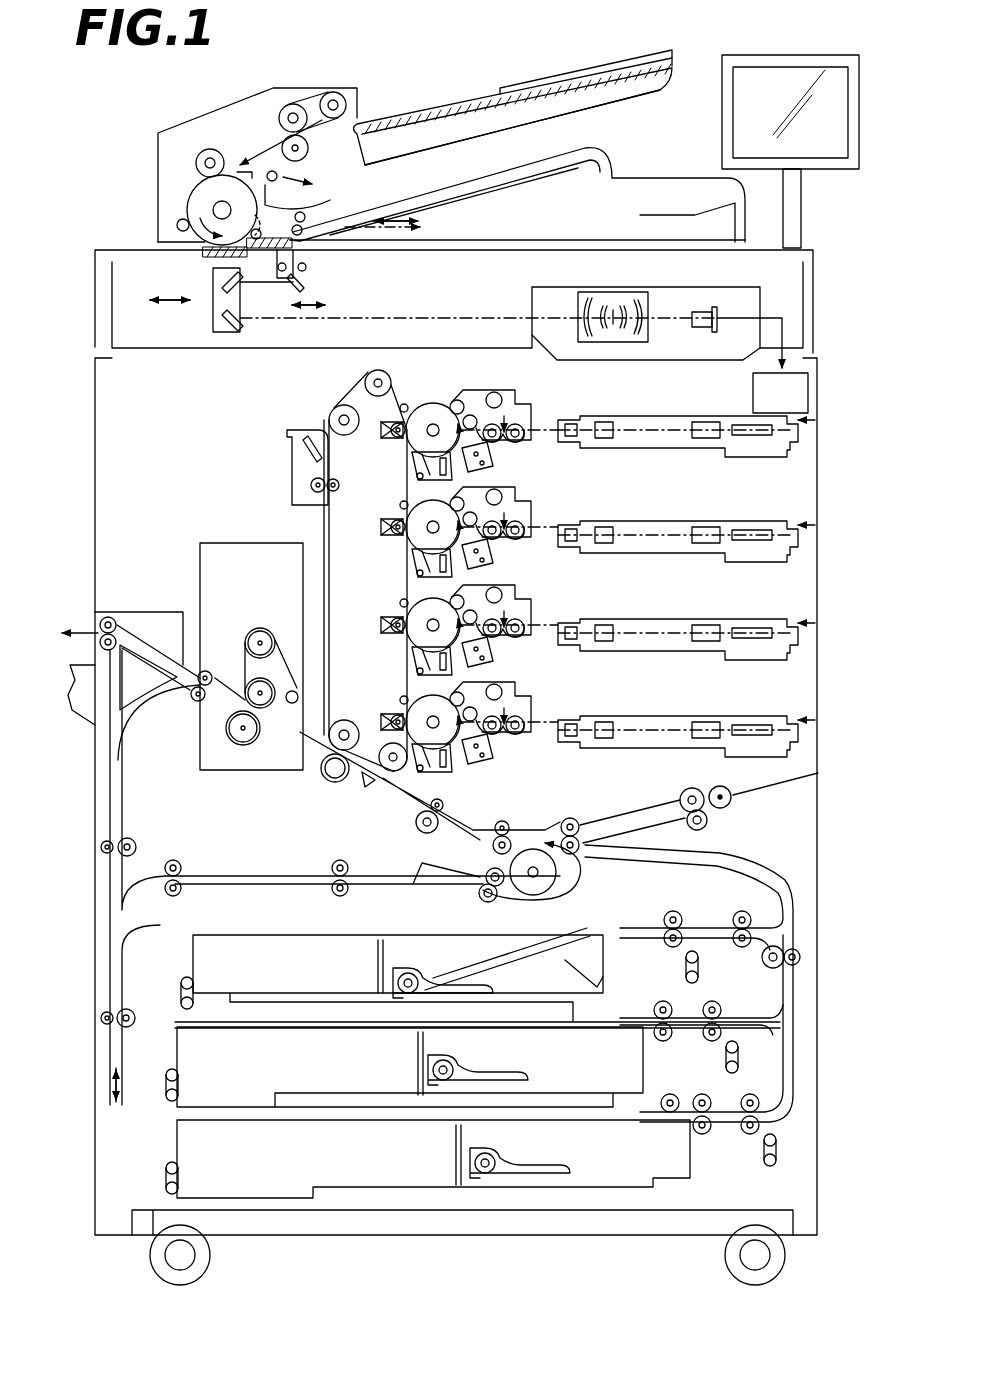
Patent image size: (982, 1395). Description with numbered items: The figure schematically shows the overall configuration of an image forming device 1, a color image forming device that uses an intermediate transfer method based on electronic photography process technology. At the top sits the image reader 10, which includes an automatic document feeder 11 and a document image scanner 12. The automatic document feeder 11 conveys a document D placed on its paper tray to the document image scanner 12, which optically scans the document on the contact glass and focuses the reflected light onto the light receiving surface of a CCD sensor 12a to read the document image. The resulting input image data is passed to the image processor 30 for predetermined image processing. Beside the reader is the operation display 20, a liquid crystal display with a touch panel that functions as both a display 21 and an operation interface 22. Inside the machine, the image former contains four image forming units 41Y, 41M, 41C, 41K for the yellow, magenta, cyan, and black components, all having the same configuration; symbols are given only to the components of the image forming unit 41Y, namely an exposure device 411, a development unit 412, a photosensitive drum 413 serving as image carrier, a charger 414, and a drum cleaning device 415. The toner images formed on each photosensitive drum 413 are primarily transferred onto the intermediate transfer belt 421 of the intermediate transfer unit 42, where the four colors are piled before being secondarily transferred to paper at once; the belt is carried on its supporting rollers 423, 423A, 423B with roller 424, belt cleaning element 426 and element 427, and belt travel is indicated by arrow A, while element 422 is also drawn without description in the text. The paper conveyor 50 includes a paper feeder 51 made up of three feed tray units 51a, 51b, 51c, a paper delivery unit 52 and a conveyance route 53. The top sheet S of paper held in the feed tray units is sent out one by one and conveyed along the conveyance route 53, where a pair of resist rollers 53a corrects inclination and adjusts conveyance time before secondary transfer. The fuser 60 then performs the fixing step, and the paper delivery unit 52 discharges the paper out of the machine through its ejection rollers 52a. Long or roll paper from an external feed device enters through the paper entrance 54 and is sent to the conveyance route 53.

The image forming device 1 is at (453, 65).
The document D is at (525, 87).
The image reader 10 is at (66, 147).
The automatic document feeder 11 is at (157, 188).
The document image scanner 12 is at (441, 283).
The CCD sensor 12a is at (715, 312).
The operation display 20 is at (796, 131).
The display 21 is at (796, 131).
The operation interface 22 is at (750, 55).
The image processor 30 is at (803, 393).
The image forming unit 41Y is at (579, 436).
The image forming unit 41M is at (574, 516).
The image forming unit 41C is at (574, 614).
The image forming unit 41K is at (574, 712).
The exposure device 411 is at (686, 420).
The development unit 412 is at (521, 409).
The photosensitive drum 413 is at (437, 404).
The charger 414 is at (507, 459).
The drum cleaning device 415 is at (398, 486).
The intermediate transfer unit 42 is at (309, 602).
The intermediate transfer belt 421 is at (328, 532).
The charging device 422 is at (380, 445).
The support rollers 423 is at (338, 407).
The backup roller 423A is at (397, 775).
The support roller 423B is at (335, 725).
The secondary transfer roller 424 is at (323, 780).
The belt cleaning device 426 is at (287, 438).
The primary transfer roller / guide 427 is at (370, 778).
The belt running direction A is at (334, 553).
The paper conveyor 50 is at (799, 933).
The paper feeder 51 is at (454, 1047).
The feed tray unit 51a is at (208, 967).
The feed tray unit 51b is at (197, 1068).
The feed tray unit 51c is at (197, 1160).
The sheet S is at (515, 952).
The paper delivery unit 52 is at (294, 833).
The ejection rollers 52a is at (118, 637).
The conveyance route 53 is at (402, 817).
The pair of resist rollers 53a is at (442, 818).
The paper entrance 54 is at (822, 773).
The fuser 60 is at (225, 537).